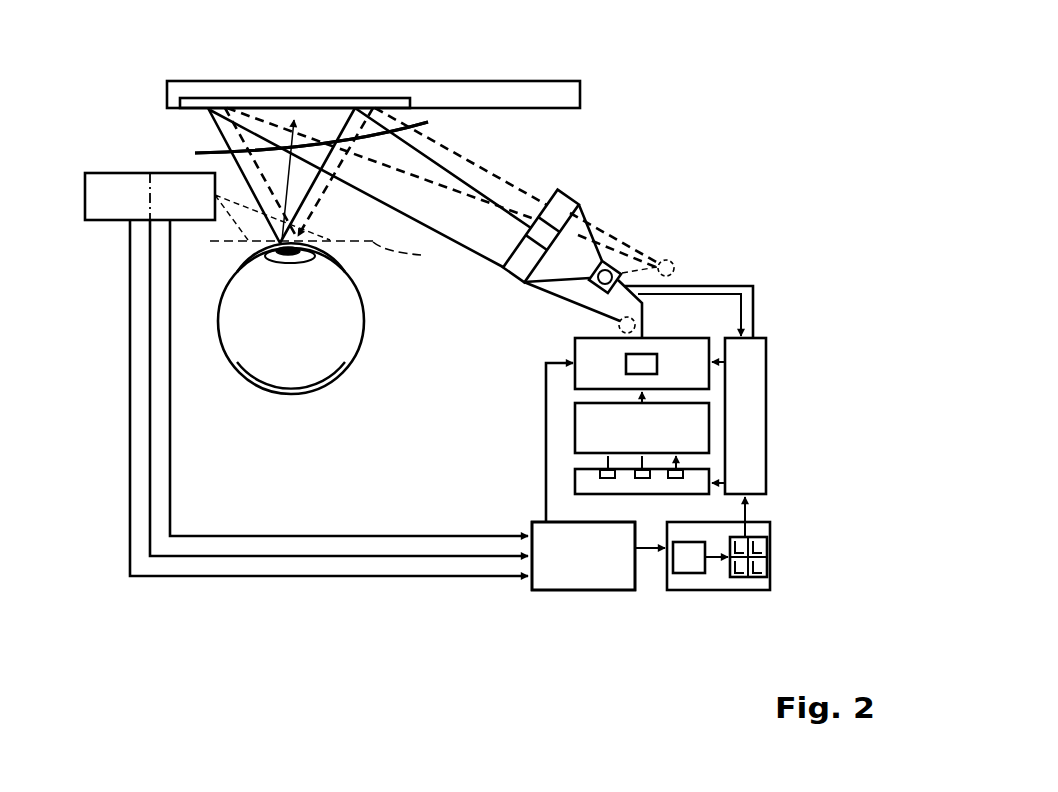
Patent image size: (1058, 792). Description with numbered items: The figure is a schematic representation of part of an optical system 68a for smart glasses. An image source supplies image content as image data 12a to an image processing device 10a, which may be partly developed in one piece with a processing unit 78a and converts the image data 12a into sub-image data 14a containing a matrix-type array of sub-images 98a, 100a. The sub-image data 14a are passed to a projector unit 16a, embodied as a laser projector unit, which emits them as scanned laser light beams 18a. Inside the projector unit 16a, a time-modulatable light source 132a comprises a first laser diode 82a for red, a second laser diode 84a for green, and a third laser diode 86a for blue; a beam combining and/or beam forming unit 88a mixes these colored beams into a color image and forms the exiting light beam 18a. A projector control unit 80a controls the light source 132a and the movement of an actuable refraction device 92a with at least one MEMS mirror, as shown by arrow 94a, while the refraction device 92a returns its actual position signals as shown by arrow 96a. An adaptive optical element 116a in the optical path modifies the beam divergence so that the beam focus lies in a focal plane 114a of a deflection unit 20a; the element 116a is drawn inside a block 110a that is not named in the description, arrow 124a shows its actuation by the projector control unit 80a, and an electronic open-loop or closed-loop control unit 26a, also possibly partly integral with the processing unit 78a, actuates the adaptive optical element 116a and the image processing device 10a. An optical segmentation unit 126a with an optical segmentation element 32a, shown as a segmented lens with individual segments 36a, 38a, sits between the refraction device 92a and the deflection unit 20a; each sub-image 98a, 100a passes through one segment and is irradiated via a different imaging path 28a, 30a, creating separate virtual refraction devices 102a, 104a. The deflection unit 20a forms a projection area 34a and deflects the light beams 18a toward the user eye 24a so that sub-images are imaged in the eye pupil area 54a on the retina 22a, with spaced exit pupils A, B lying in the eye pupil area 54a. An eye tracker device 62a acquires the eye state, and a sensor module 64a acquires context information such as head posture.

The image processing device 10a is at (740, 590).
The image data 12a is at (685, 573).
The sub-image data 14a is at (746, 515).
The projector unit 16a is at (535, 447).
The light beams 18a is at (703, 184).
The deflection unit 20a is at (411, 104).
The retina 22a is at (332, 382).
The user eye 24a is at (267, 390).
The open-loop or closed-loop control unit 26a is at (583, 570).
The processing unit 78a is at (583, 556).
The first imaging path 28a is at (263, 274).
The second imaging path 30a is at (296, 274).
The optical segmentation element 32a is at (566, 188).
The projection area 34a is at (250, 148).
The first individual segment 36a is at (568, 197).
The second individual segment 38a is at (518, 285).
The eye pupil area 54a is at (341, 265).
The eye tracker device 62a is at (172, 207).
The sensor module 64a is at (118, 202).
The optical system 68a is at (684, 108).
The projector control unit 80a is at (766, 428).
The first laser diode 82a is at (700, 467).
The second laser diode 84a is at (726, 483).
The third laser diode 86a is at (602, 476).
The beam combining and/or beam forming unit 88a is at (575, 428).
The actuable refraction device 92a is at (622, 262).
The arrow 94a is at (755, 318).
The arrow 96a is at (618, 217).
The first sub-image 98a is at (768, 545).
The second sub-image 100a is at (768, 566).
The first virtual refraction device 102a is at (675, 265).
The second virtual refraction device 104a is at (636, 321).
The memory unit 110a is at (710, 353).
The focal plane 114a is at (428, 122).
The adaptive optical element 116a is at (631, 365).
The arrow 124a is at (713, 364).
The optical segmentation unit 126a is at (553, 183).
The light source 132a is at (580, 494).
The first exit pupil A is at (278, 249).
The second exit pupil B is at (292, 252).